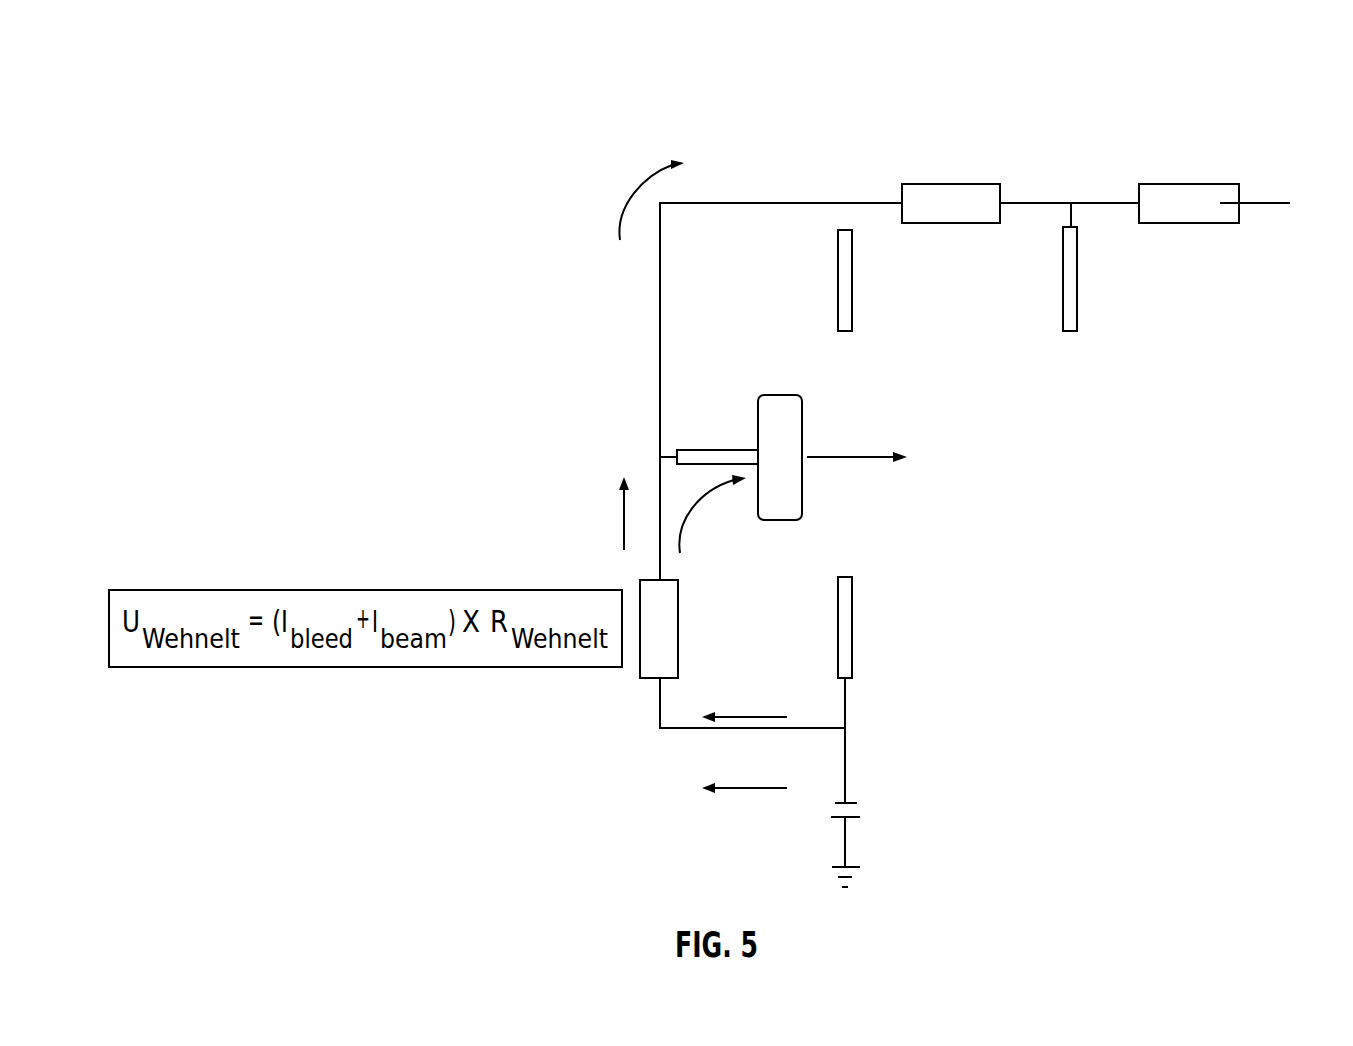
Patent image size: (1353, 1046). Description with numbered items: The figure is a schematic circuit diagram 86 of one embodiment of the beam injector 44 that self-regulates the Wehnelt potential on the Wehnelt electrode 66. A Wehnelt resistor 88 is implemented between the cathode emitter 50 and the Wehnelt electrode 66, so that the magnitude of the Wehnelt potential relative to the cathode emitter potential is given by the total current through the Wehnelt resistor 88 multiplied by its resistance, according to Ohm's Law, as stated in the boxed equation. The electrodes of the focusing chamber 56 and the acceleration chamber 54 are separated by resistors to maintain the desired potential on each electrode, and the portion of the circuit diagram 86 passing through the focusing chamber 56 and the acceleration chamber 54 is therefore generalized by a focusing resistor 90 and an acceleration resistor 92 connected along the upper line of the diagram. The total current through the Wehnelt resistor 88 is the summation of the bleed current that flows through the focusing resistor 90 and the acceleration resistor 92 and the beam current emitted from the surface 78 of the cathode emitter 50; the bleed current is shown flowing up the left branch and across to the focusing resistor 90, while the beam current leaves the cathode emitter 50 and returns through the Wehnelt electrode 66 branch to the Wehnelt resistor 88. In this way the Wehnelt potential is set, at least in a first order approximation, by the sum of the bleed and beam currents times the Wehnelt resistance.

The circuit diagram 86 is at (416, 72).
The beam injector 44 is at (515, 283).
The cathode emitter 50 is at (780, 395).
The surface 78 is at (809, 399).
The focusing resistor 90 is at (905, 184).
The acceleration resistor 92 is at (1148, 184).
The Wehnelt electrode 66 is at (838, 283).
The focusing chamber 56 is at (1002, 299).
The acceleration chamber 54 is at (1208, 299).
The Wehnelt resistor 88 is at (680, 601).